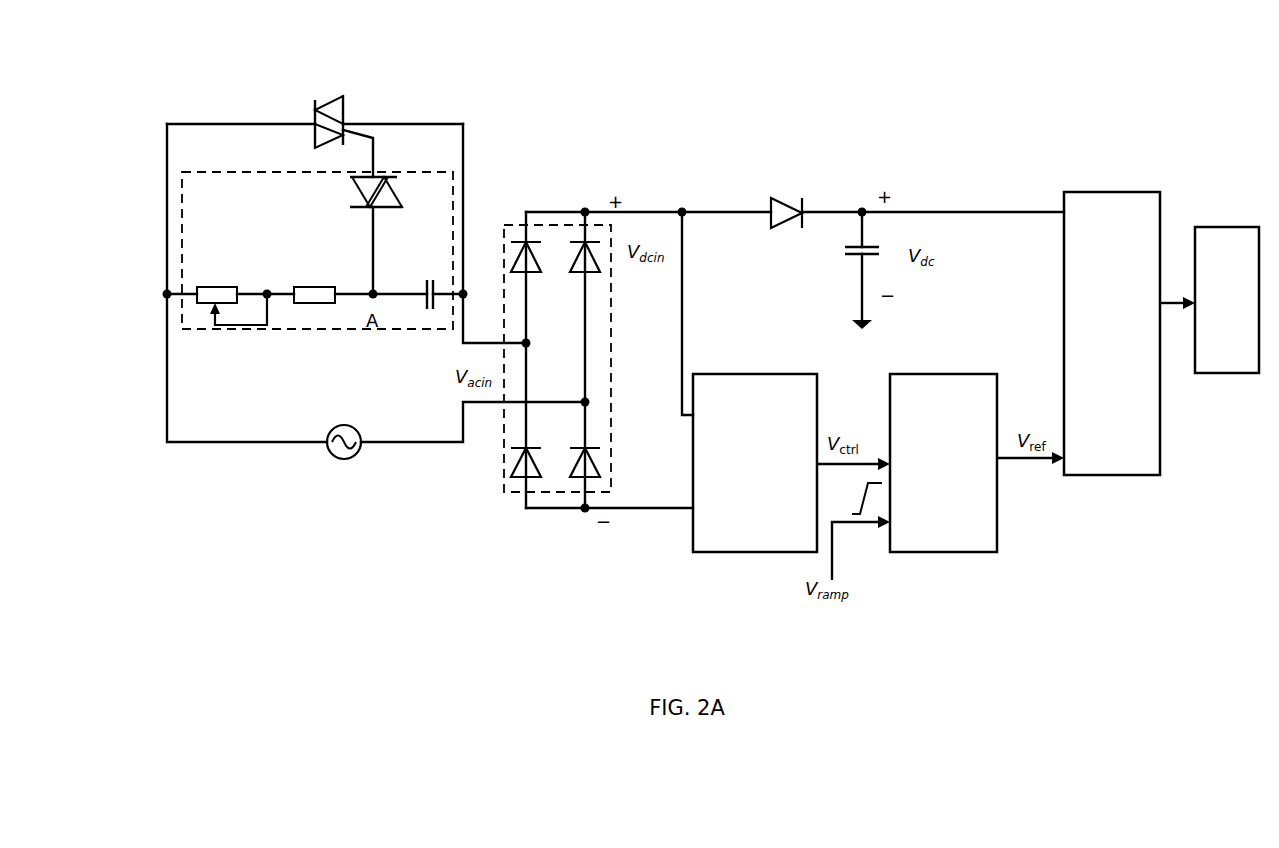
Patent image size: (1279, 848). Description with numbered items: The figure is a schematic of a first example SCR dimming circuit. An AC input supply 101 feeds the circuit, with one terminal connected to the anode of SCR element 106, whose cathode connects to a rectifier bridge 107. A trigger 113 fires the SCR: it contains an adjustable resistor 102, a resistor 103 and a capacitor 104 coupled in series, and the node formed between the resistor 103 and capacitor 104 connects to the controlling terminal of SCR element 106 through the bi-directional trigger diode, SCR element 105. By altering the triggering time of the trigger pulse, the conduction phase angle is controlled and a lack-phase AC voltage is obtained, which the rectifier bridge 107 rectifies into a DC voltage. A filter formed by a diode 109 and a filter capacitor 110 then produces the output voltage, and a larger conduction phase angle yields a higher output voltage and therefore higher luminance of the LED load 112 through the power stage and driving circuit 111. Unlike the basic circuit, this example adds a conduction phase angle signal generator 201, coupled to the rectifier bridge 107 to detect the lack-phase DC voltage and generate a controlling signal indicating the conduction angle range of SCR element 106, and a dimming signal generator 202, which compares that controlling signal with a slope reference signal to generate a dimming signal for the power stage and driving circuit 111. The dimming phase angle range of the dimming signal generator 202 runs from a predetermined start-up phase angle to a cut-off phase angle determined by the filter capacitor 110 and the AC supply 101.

The AC input supply 101 is at (349, 437).
The adjustable resistor 102 is at (224, 290).
The resistor 103 is at (318, 288).
The capacitor 104 is at (426, 289).
The SCR element 105 is at (386, 196).
The SCR element 106 is at (335, 100).
The rectifier bridge 107 is at (573, 311).
The diode 109 is at (785, 204).
The filter capacitor 110 is at (845, 251).
The power stage and driving circuit 111 is at (1095, 415).
The LED load 112 is at (1210, 338).
The trigger 113 is at (230, 206).
The conduction phase angle signal generator 201 is at (738, 543).
The dimming signal generator 202 is at (926, 518).